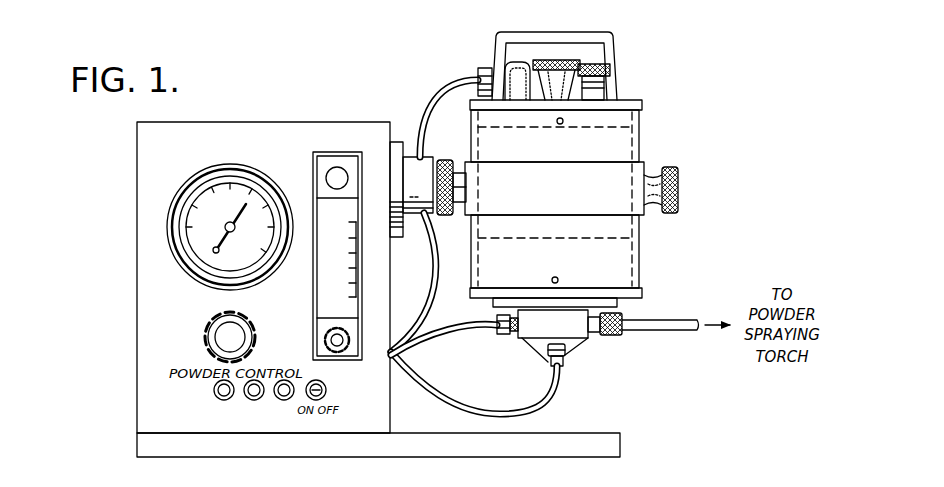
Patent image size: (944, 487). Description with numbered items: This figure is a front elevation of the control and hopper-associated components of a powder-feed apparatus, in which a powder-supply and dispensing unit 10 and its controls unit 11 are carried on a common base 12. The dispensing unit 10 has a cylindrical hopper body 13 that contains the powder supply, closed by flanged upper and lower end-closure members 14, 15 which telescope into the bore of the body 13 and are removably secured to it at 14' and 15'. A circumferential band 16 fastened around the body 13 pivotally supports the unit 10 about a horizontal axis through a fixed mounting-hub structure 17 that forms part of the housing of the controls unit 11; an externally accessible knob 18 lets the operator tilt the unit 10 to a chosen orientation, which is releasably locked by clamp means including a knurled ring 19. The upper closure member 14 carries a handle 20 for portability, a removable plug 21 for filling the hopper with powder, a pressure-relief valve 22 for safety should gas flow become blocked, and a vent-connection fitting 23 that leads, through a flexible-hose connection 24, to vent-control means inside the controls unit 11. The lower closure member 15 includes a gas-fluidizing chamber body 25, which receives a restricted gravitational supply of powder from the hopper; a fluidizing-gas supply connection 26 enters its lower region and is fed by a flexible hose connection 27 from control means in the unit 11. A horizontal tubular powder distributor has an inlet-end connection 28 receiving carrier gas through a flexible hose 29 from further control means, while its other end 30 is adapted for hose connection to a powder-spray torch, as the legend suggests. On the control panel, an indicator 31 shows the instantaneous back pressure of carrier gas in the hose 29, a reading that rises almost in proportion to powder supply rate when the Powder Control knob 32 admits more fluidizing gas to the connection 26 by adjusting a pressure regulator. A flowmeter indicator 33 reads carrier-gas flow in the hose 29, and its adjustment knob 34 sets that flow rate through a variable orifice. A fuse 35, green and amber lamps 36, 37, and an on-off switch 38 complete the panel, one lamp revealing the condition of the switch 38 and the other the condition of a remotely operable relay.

The powder-supply and dispensing unit 10 is at (650, 50).
The controls unit 11 is at (306, 116).
The base 12 is at (596, 436).
The cylindrical hopper body 13 is at (623, 253).
The upper end-closure member 14 is at (580, 122).
The securing means for upper closure member 14' is at (577, 136).
The lower end-closure member 15 is at (583, 295).
The securing means for lower closure member 15' is at (575, 270).
The circumferential band 16 is at (619, 178).
The mounting-hub structure 17 is at (421, 226).
The knob 18 is at (680, 190).
The knurled ring 19 is at (458, 188).
The handle 20 is at (612, 50).
The removable plug 21 is at (561, 61).
The pressure-relief valve 22 is at (600, 84).
The vent-connection fitting 23 is at (517, 62).
The flexible-hose connection 24 is at (452, 94).
The gas-fluidizing chamber body 25 is at (514, 346).
The fluidizing-gas supply connection 26 is at (563, 353).
The flexible hose connection 27 is at (549, 410).
The inlet-end connection 28 is at (503, 332).
The flexible hose 29 is at (471, 322).
The other end of powder distributor 30 is at (598, 336).
The indicator 31 is at (199, 166).
The knob 32 is at (206, 331).
The flowmeter indicator 33 is at (311, 300).
The adjustment knob 34 is at (324, 340).
The fuse 35 is at (217, 397).
The green lamp 36 is at (252, 400).
The amber lamp 37 is at (285, 400).
The on-off switch 38 is at (326, 390).